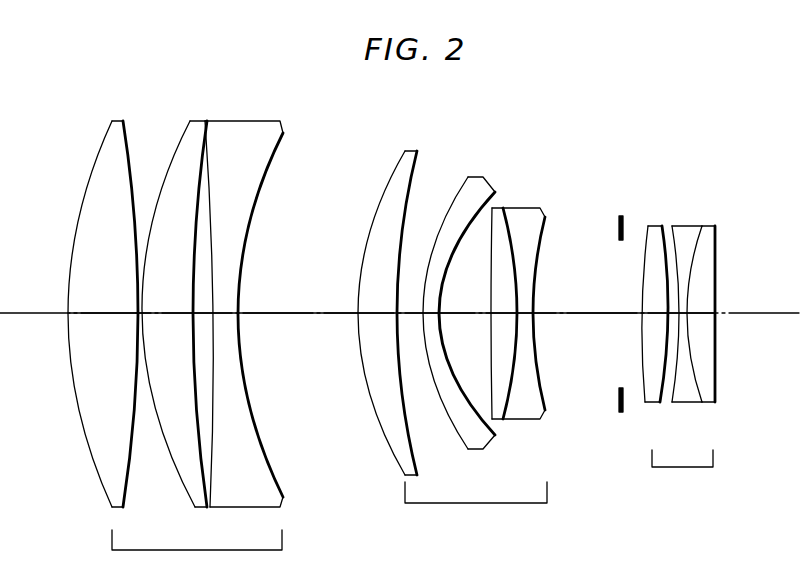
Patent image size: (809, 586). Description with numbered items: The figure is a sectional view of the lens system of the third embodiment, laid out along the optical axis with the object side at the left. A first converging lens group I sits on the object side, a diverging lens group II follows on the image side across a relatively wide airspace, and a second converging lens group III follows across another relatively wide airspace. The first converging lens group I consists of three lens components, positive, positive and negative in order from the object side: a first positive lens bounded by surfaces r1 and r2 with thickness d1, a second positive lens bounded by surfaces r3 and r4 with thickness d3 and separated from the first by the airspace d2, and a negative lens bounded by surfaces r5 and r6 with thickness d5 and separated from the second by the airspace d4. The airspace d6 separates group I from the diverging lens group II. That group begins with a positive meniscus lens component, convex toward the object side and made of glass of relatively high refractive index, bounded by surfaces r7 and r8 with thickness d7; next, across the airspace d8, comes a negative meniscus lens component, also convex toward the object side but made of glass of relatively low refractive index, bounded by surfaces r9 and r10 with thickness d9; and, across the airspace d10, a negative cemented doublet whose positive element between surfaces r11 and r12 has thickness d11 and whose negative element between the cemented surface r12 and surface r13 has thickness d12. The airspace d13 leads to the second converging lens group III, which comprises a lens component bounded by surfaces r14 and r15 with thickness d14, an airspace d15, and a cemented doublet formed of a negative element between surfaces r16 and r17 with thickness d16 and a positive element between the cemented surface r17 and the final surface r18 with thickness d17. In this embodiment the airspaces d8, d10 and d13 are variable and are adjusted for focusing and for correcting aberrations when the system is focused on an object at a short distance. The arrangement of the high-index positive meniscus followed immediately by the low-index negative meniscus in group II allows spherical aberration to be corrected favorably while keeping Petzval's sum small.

The radius of curvature of first lens surface r1 is at (107, 130).
The radius of curvature of second lens surface r2 is at (126, 131).
The radius of curvature of third lens surface r3 is at (184, 134).
The radius of curvature of fourth lens surface r4 is at (199, 123).
The radius of curvature of fifth lens surface r5 is at (207, 156).
The radius of curvature of sixth lens surface r6 is at (285, 143).
The radius of curvature of seventh lens surface r7 is at (402, 156).
The radius of curvature of eighth lens surface r8 is at (418, 166).
The radius of curvature of ninth lens surface r9 is at (462, 185).
The radius of curvature of tenth lens surface r10 is at (478, 179).
The radius of curvature of eleventh lens surface r11 is at (488, 213).
The radius of curvature of twelfth lens surface r12 is at (507, 211).
The radius of curvature of thirteenth lens surface r13 is at (546, 232).
The radius of curvature of fourteenth lens surface r14 is at (645, 238).
The radius of curvature of fifteenth lens surface r15 is at (663, 237).
The radius of curvature of sixteenth lens surface r16 is at (674, 245).
The radius of curvature of seventeenth lens surface r17 is at (701, 241).
The radius of curvature of eighteenth lens surface r18 is at (716, 244).
The thickness of first lens element d1 is at (100, 314).
The airspace between first and second lens components d2 is at (137, 313).
The thickness of second lens element d3 is at (165, 314).
The airspace between second and third lens components d4 is at (202, 311).
The thickness of third lens element d5 is at (231, 314).
The airspace between first converging group and diverging group d6 is at (290, 314).
The thickness of positive meniscus lens component d7 is at (380, 314).
The variable airspace D1 d8 is at (411, 318).
The thickness of negative meniscus lens component d9 is at (430, 312).
The variable airspace D2 d10 is at (467, 314).
The thickness of positive element of negative cemented doublet d11 is at (503, 312).
The thickness of negative element of negative cemented doublet d12 is at (529, 312).
The variable airspace D3 d13 is at (568, 314).
The thickness of first lens component of second converging group d14 is at (655, 313).
The airspace within second converging group d15 is at (672, 318).
The thickness of negative element of doublet in second converging group d16 is at (687, 318).
The thickness of positive element of doublet in second converging group d17 is at (753, 314).
The first converging lens group I is at (197, 556).
The diverging lens group II is at (476, 508).
The second converging lens group III is at (682, 473).